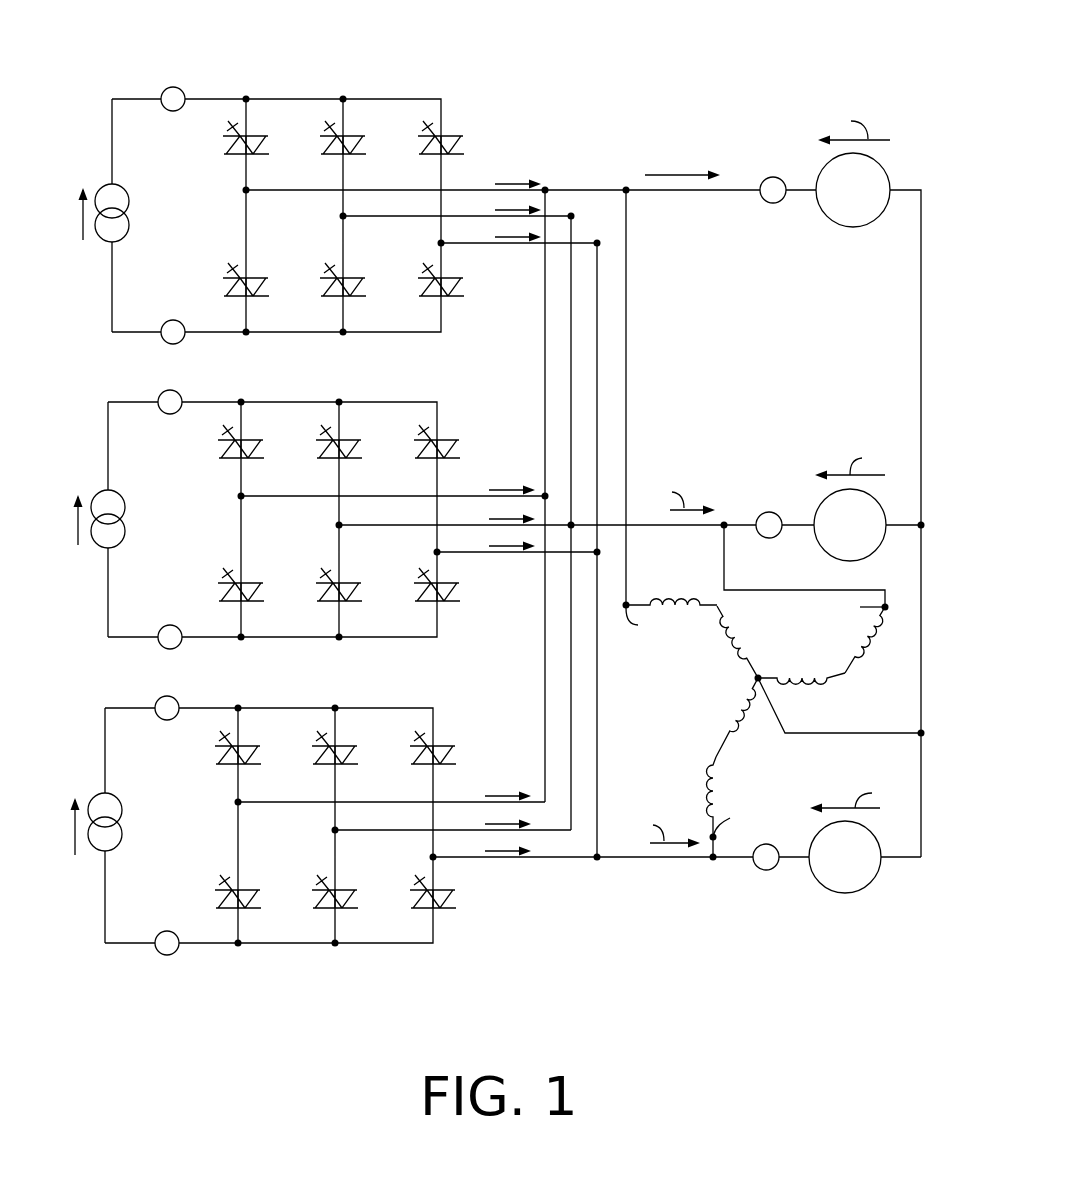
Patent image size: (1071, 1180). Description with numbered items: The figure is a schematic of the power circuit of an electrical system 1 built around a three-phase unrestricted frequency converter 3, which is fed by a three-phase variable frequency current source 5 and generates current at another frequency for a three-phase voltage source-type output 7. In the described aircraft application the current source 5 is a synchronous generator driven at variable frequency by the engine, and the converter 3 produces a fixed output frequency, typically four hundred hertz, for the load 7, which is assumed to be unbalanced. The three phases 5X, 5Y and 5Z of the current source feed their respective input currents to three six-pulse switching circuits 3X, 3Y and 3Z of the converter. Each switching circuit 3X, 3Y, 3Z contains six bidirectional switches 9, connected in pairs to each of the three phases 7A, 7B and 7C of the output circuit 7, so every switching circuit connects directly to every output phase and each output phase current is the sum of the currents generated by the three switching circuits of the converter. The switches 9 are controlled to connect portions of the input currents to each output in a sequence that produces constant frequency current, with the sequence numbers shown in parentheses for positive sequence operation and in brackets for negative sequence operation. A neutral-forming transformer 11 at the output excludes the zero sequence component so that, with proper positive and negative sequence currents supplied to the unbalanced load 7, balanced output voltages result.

The electrical system 1 is at (610, 75).
The three-phase unrestricted frequency converter 3 is at (441, 74).
The six-pulse switching circuit 3X is at (324, 226).
The six-pulse switching circuit 3Y is at (311, 531).
The six-pulse switching circuit 3Z is at (308, 844).
The three-phase variable frequency current source 5 is at (87, 122).
The current source phase X 5X is at (126, 236).
The current source phase Y 5Y is at (122, 541).
The current source phase Z 5Z is at (118, 845).
The three-phase voltage source-type output 7 is at (917, 134).
The output phase A 7A is at (853, 227).
The output phase B 7B is at (828, 555).
The output phase C 7C is at (845, 893).
The bidirectional switch 9 is at (256, 135).
The neutral-forming transformer 11 is at (852, 697).